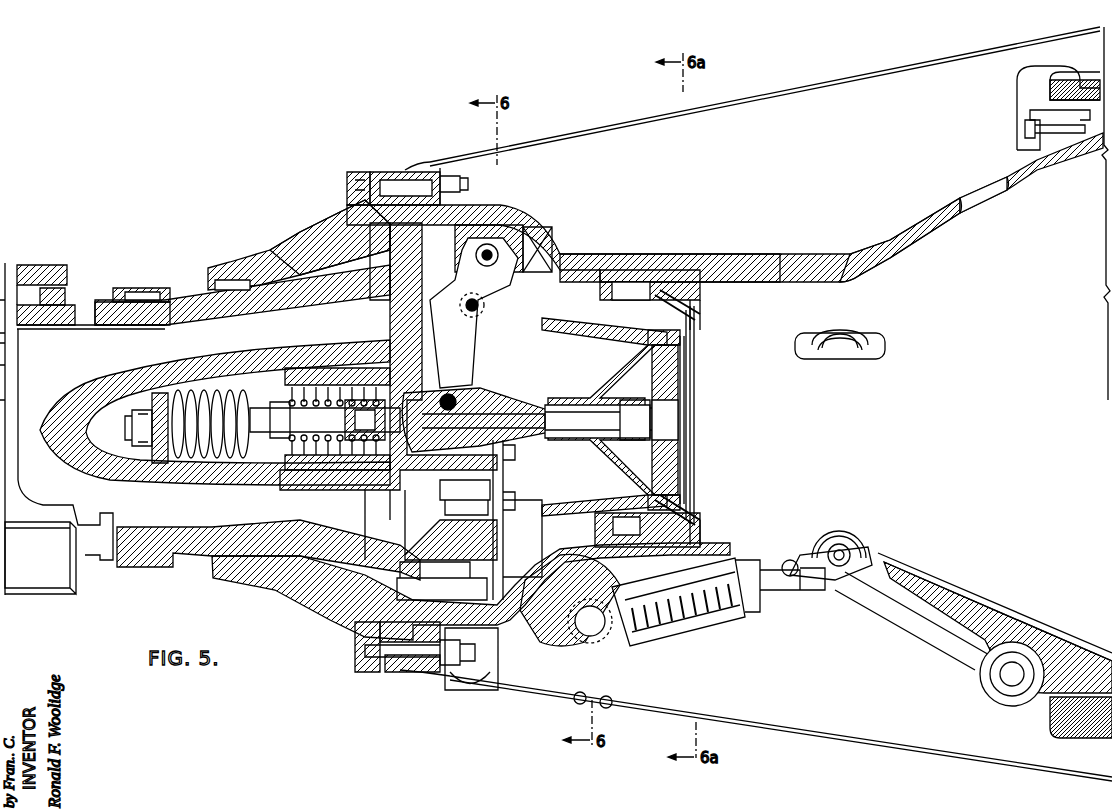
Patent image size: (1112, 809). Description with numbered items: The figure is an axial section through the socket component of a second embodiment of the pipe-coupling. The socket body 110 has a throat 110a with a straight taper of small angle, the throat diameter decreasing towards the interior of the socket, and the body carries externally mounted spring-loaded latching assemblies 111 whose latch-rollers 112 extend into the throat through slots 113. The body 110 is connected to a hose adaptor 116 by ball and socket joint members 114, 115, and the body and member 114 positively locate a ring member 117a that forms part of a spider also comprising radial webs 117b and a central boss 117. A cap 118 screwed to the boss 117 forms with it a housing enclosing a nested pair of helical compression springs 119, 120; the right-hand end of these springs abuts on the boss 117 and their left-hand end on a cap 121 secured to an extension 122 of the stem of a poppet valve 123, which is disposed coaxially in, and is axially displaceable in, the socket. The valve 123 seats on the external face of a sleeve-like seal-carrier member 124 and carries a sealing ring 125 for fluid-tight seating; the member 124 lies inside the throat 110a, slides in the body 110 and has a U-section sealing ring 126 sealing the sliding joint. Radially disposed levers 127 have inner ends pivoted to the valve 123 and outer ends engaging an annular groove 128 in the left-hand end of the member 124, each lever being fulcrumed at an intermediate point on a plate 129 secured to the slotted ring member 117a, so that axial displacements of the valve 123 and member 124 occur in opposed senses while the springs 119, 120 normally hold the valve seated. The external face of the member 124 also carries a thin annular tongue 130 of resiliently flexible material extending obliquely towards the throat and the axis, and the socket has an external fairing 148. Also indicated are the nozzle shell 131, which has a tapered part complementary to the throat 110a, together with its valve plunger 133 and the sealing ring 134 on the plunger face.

The socket body 110 is at (740, 262).
The throat 110a is at (762, 266).
The spring-loaded latching assemblies 111 is at (836, 575).
The latch-rollers 112 is at (835, 358).
The slots 113 is at (878, 348).
The ball and socket joint member 114 is at (255, 255).
The ball and socket joint member 115 is at (296, 268).
The hose adaptor 116 is at (45, 575).
The central boss 117 is at (366, 490).
The ring member 117a is at (320, 604).
The radial webs 117b is at (405, 300).
The cap 118 is at (90, 400).
The helical compression spring 119 is at (205, 390).
The helical compression spring 120 is at (290, 488).
The cap 121 is at (165, 300).
The extension of the stem 122 is at (292, 404).
The poppet valve 123 is at (437, 470).
The sleeve-like seal-carrier member 124 is at (528, 228).
The sealing ring 125 is at (625, 490).
The U-section sealing ring 126 is at (627, 268).
The radially disposed levers 127 is at (368, 196).
The annular groove 128 is at (412, 178).
The plate 129 is at (557, 236).
The annular tongue 130 is at (680, 270).
The shell 131 is at (676, 344).
The valve plunger 133 is at (694, 420).
The sealing ring 134 is at (684, 397).
The external fairing 148 is at (826, 737).